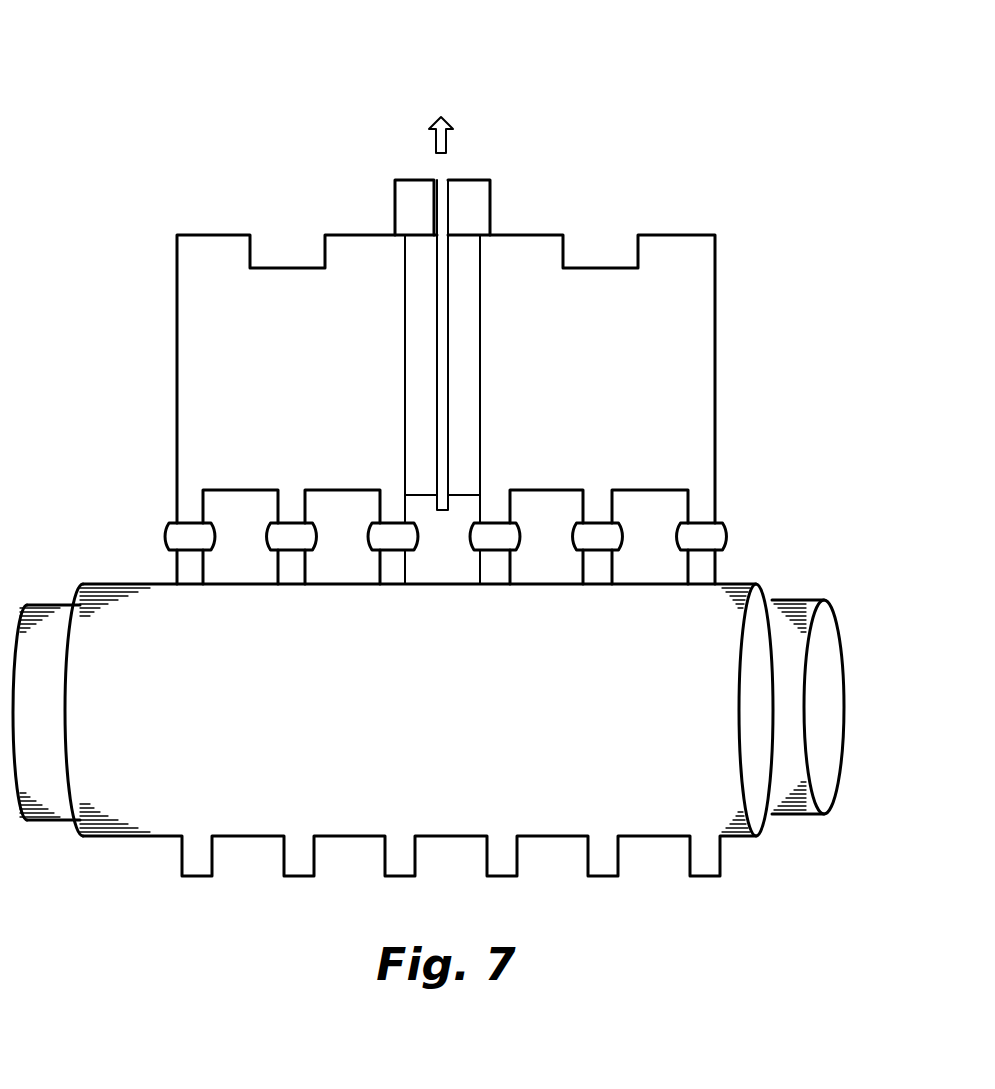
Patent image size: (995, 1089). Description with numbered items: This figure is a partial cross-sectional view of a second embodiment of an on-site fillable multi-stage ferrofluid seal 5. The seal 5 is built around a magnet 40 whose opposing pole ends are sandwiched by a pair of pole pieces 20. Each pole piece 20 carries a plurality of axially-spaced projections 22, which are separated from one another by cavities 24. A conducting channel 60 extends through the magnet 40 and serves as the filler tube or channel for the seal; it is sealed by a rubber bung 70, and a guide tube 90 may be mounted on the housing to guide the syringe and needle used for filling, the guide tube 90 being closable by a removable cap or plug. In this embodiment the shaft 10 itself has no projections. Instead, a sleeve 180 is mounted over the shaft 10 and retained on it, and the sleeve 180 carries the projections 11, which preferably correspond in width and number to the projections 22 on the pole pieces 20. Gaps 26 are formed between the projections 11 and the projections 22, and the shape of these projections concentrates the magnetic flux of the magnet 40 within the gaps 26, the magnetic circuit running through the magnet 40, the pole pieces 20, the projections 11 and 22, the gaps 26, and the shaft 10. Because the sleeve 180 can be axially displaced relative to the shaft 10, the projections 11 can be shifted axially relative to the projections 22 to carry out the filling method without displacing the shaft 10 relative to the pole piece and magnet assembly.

The multi-stage ferrofluid seal 5 is at (187, 84).
The shaft 10 is at (792, 668).
The projections 11 is at (598, 560).
The pole pieces 20 is at (189, 312).
The projections 22 is at (650, 489).
The cavities 24 is at (606, 489).
The gaps 26 is at (192, 538).
The magnet 40 is at (472, 333).
The conducting channel 60 is at (440, 207).
The rubber bung 70 is at (440, 116).
The guide tube 90 is at (467, 192).
The sleeve 180 is at (650, 795).